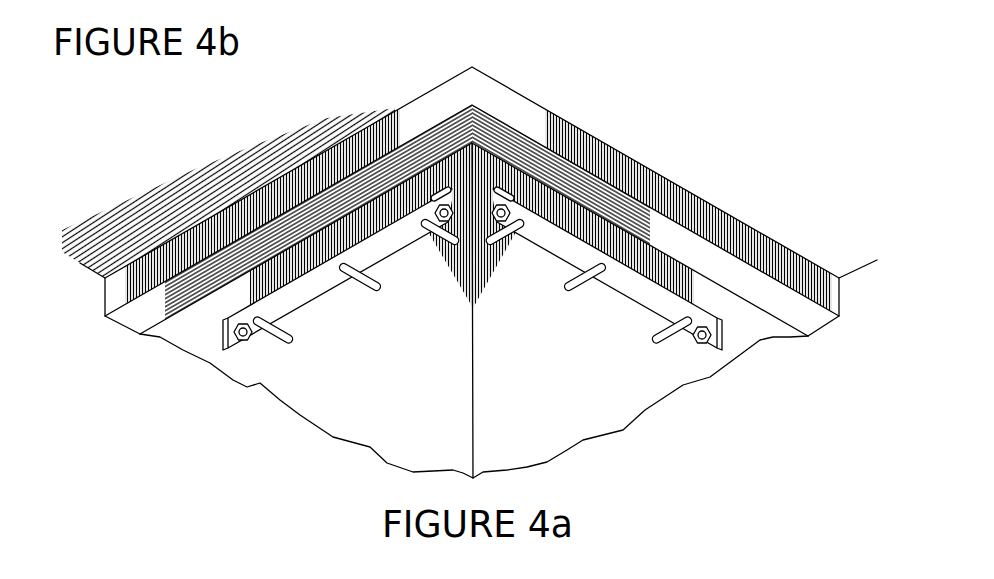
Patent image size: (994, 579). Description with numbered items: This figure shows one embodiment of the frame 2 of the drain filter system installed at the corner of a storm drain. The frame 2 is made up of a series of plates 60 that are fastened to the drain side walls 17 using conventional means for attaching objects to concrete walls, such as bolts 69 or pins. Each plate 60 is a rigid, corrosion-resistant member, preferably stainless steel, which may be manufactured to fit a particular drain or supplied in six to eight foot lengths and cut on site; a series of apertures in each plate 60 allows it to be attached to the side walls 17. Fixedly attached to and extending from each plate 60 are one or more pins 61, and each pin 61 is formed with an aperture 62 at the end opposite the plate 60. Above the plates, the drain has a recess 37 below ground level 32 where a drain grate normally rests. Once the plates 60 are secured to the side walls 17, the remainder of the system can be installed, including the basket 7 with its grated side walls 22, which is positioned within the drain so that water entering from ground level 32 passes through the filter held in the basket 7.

In FIG. 4a, the frame 2 is at (713, 292).
In FIG. 4b, the basket 7 is at (279, 0).
In FIG. 4b, the grated side walls 22 is at (279, 0).
In FIG. 4a, the drain side walls 17 is at (393, 406).
In FIG. 4a, the ground level 32 is at (240, 168).
In FIG. 4a, the recess 37 is at (150, 308).
In FIG. 4a, the plate 60 is at (593, 260).
In FIG. 4a, the pin 61 is at (508, 238).
In FIG. 4a, the aperture 62 is at (577, 280).
In FIG. 4a, the bolts 69 is at (455, 207).